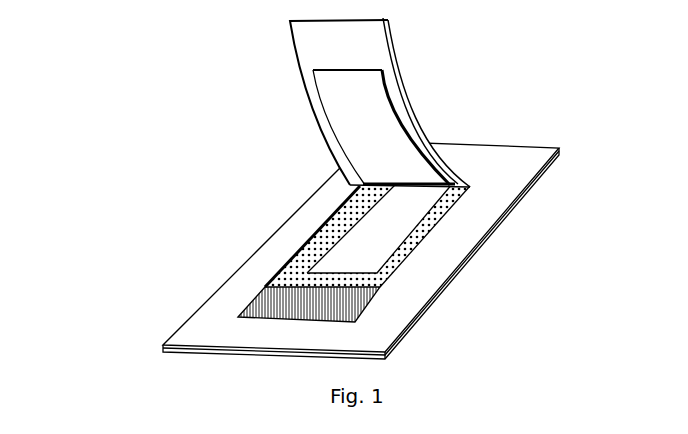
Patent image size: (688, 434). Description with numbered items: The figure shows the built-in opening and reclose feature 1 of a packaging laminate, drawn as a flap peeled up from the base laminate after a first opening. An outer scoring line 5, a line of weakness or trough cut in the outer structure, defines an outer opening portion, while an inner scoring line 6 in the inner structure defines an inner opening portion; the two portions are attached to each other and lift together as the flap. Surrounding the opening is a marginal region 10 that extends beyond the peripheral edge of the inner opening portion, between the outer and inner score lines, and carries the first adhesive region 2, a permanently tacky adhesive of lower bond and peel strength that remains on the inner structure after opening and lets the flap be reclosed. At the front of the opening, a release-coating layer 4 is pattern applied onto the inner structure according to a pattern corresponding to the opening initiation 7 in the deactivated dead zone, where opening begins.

The built-in opening and reclose feature 1 is at (90, 157).
The first adhesive region 2 is at (392, 268).
The release-coating layer 4 is at (268, 307).
The scoring line of the outer structure 5 is at (400, 70).
The scoring line of the inner structure 6 is at (402, 128).
The opening initiation 7 is at (312, 48).
The marginal region 10 is at (417, 140).